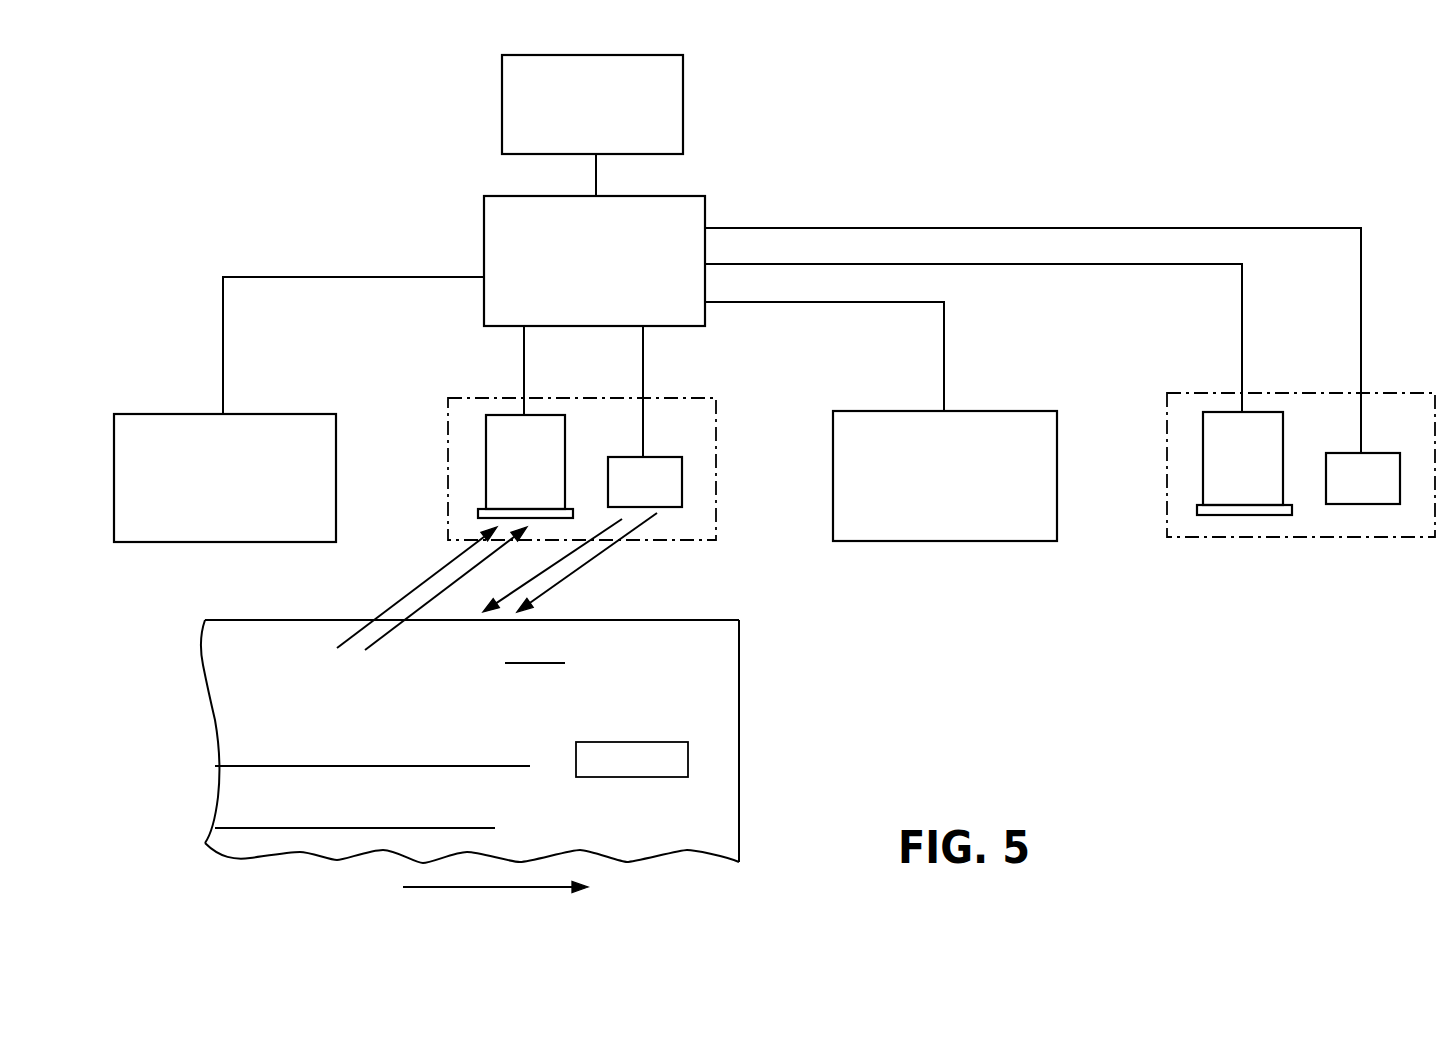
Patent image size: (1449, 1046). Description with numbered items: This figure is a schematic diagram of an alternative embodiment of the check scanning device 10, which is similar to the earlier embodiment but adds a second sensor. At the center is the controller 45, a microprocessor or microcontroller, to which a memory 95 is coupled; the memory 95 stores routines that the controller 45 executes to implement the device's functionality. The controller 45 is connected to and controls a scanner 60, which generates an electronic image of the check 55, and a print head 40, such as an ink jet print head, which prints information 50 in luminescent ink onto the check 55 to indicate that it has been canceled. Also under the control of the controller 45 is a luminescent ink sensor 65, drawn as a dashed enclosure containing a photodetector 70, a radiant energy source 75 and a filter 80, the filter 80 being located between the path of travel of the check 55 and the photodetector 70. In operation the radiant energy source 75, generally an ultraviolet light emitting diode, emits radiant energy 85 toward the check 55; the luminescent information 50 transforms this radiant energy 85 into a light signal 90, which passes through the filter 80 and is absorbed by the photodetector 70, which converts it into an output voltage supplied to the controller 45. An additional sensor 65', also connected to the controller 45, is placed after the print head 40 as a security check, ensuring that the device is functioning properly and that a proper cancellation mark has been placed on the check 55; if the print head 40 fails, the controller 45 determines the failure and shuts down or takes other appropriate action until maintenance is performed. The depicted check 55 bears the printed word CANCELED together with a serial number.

The check scanning device 10 is at (194, 220).
The print head 40 is at (975, 411).
The controller 45 is at (483, 217).
The information 50 is at (261, 639).
The check 55 is at (739, 702).
The scanner 60 is at (187, 414).
The luminescent ink sensor 65 is at (584, 443).
The second sensor 65' is at (1264, 458).
The photodetector 70 is at (498, 415).
The radiant energy source 75 is at (682, 477).
The filter 80 is at (480, 513).
The radiant energy 85 is at (560, 592).
The light signal 90 is at (410, 582).
The memory 95 is at (683, 101).